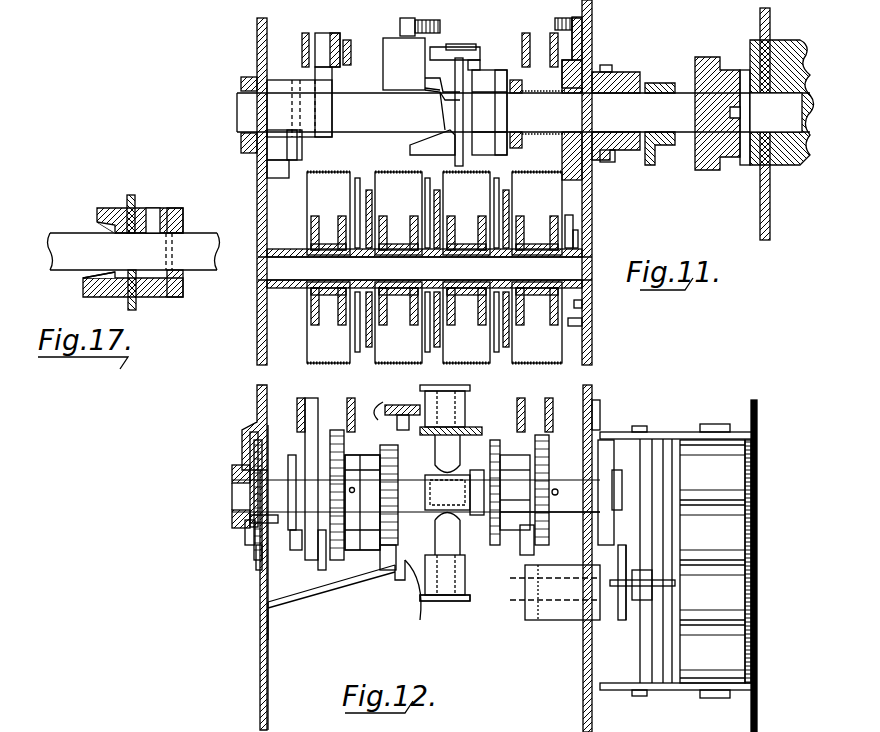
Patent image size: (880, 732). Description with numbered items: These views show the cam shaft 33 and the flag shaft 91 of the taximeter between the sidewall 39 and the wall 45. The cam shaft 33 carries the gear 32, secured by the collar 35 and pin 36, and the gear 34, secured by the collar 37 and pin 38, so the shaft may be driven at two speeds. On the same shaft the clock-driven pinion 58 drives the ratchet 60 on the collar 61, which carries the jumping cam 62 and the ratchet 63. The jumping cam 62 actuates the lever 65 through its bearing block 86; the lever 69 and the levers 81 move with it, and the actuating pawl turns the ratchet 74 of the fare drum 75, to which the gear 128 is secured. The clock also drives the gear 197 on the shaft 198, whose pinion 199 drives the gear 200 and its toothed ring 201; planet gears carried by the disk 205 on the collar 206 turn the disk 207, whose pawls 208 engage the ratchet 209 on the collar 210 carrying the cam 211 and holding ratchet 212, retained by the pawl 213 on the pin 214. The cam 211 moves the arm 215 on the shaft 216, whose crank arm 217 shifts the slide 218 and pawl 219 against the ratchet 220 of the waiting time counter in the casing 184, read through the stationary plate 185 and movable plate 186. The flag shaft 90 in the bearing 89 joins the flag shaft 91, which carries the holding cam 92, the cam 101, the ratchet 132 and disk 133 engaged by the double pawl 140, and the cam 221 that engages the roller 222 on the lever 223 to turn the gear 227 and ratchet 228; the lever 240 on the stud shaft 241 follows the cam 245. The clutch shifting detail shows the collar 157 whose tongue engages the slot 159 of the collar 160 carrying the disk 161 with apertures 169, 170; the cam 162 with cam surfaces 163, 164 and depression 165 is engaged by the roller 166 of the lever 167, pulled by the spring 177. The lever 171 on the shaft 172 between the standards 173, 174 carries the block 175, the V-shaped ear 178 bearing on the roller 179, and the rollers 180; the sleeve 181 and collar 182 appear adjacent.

In FIG. 12, the gear 32 is at (583, 422).
In FIG. 12, the cam shaft 33 is at (232, 494).
In FIG. 12, the gear 34 is at (362, 502).
In FIG. 12, the collar 35 is at (560, 505).
In FIG. 12, the pin 36 is at (558, 481).
In FIG. 12, the collar 37 is at (346, 467).
In FIG. 12, the pin 38 is at (362, 502).
In FIG. 11, the sidewall 39 is at (594, 351).
In FIG. 12, the sidewall 39 is at (581, 671).
In FIG. 11, the wall 45 is at (267, 360).
In FIG. 12, the wall 45 is at (269, 686).
In FIG. 12, the pinion 58 is at (250, 449).
In FIG. 12, the ratchet 60 is at (246, 529).
In FIG. 12, the collar 61 is at (271, 500).
In FIG. 12, the jumping cam 62 is at (314, 438).
In FIG. 12, the ratchet 63 is at (326, 564).
In FIG. 11, the lever 65 is at (302, 52).
In FIG. 12, the lever 65 is at (304, 398).
In FIG. 11, the lever 69 is at (558, 52).
In FIG. 12, the lever 69 is at (550, 398).
In FIG. 11, the ratchet 74 is at (582, 324).
In FIG. 11, the fare drum 75 is at (526, 359).
In FIG. 11, the lever 81 is at (337, 52).
In FIG. 12, the lever 81 is at (320, 722).
In FIG. 12, the bearing block 86 is at (310, 411).
In FIG. 11, the bearing 89 is at (790, 50).
In FIG. 11, the shaft 90 is at (782, 102).
In FIG. 11, the flag shaft 91 is at (523, 112).
In FIG. 17, the flag shaft 91 is at (134, 251).
In FIG. 11, the holding cam 92 is at (705, 165).
In FIG. 11, the cam 101 is at (655, 152).
In FIG. 11, the gear 128 is at (582, 304).
In FIG. 11, the ratchet 132 is at (620, 161).
In FIG. 11, the disk 133 is at (625, 74).
In FIG. 11, the double pawl 140 is at (590, 52).
In FIG. 11, the collar 157 is at (508, 113).
In FIG. 17, the collar 157 is at (183, 218).
In FIG. 17, the slot 159 is at (154, 208).
In FIG. 11, the collar 160 is at (472, 138).
In FIG. 17, the collar 160 is at (183, 297).
In FIG. 11, the disk 161 is at (472, 104).
In FIG. 17, the disk 161 is at (136, 306).
In FIG. 11, the cam 162 is at (445, 98).
In FIG. 17, the cam 162 is at (110, 297).
In FIG. 11, the cam surface 163 is at (410, 150).
In FIG. 17, the cam surface 163 is at (83, 288).
In FIG. 11, the cam surface 164 is at (428, 80).
In FIG. 17, the cam surface 164 is at (97, 216).
In FIG. 11, the depression 165 is at (445, 118).
In FIG. 11, the roller 166 is at (404, 64).
In FIG. 11, the lever 167 is at (400, 28).
In FIG. 12, the lever 167 is at (397, 404).
In FIG. 17, the aperture 169 is at (148, 188).
In FIG. 11, the aperture 170 is at (462, 115).
In FIG. 11, the lever 171 is at (479, 43).
In FIG. 12, the lever 171 is at (449, 409).
In FIG. 12, the shaft 172 is at (449, 575).
In FIG. 12, the standard 173 is at (445, 383).
In FIG. 12, the standard 174 is at (454, 601).
In FIG. 11, the block 175 is at (474, 63).
In FIG. 11, the spring 177 is at (440, 26).
In FIG. 11, the V-shaped ear 178 is at (443, 40).
In FIG. 12, the V-shaped ear 178 is at (450, 491).
In FIG. 12, the roller 179 is at (372, 404).
In FIG. 12, the rollers 180 is at (543, 622).
In FIG. 11, the sleeve 181 is at (327, 82).
In FIG. 11, the collar 182 is at (328, 33).
In FIG. 12, the casing 184 is at (688, 692).
In FIG. 12, the stationary plate 185 is at (755, 527).
In FIG. 12, the movable plate 186 is at (752, 497).
In FIG. 12, the gear 197 is at (256, 574).
In FIG. 12, the shaft 198 is at (342, 602).
In FIG. 12, the pinion 199 is at (380, 572).
In FIG. 12, the gear 200 is at (392, 436).
In FIG. 12, the toothed ring 201 is at (405, 580).
In FIG. 12, the disk 205 is at (420, 598).
In FIG. 12, the collar 206 is at (436, 515).
In FIG. 12, the disk 207 is at (493, 438).
In FIG. 12, the pawls 208 is at (500, 445).
In FIG. 12, the ratchet 209 is at (515, 479).
In FIG. 12, the collar 210 is at (515, 501).
In FIG. 12, the cam 211 is at (520, 540).
In FIG. 12, the holding ratchet 212 is at (543, 455).
In FIG. 12, the pawl 213 is at (528, 556).
In FIG. 12, the pin 214 is at (528, 580).
In FIG. 12, the arm 215 is at (528, 600).
In FIG. 12, the shaft 216 is at (538, 620).
In FIG. 12, the crank arm 217 is at (621, 603).
In FIG. 12, the slide 218 is at (622, 600).
In FIG. 12, the pawl 219 is at (650, 560).
In FIG. 12, the ratchet 220 is at (735, 582).
In FIG. 11, the cam 221 is at (298, 82).
In FIG. 11, the roller 222 is at (302, 148).
In FIG. 11, the lever 223 is at (285, 180).
In FIG. 12, the gear 227 is at (292, 455).
In FIG. 12, the ratchet 228 is at (300, 552).
In FIG. 12, the lever 240 is at (330, 595).
In FIG. 12, the stud shaft 241 is at (278, 555).
In FIG. 11, the cam 245 is at (300, 75).